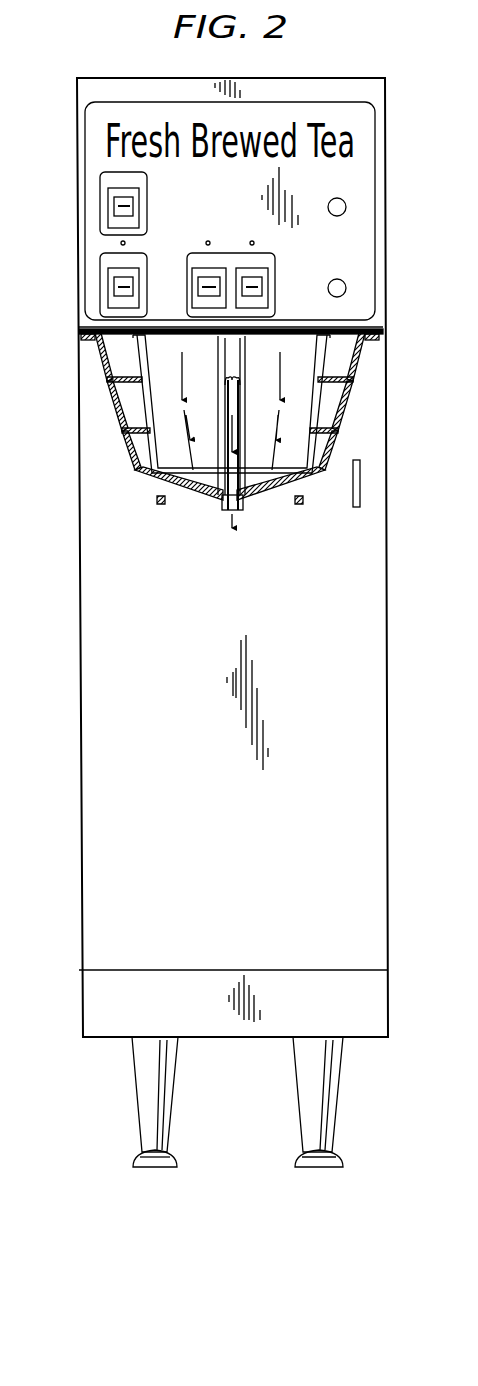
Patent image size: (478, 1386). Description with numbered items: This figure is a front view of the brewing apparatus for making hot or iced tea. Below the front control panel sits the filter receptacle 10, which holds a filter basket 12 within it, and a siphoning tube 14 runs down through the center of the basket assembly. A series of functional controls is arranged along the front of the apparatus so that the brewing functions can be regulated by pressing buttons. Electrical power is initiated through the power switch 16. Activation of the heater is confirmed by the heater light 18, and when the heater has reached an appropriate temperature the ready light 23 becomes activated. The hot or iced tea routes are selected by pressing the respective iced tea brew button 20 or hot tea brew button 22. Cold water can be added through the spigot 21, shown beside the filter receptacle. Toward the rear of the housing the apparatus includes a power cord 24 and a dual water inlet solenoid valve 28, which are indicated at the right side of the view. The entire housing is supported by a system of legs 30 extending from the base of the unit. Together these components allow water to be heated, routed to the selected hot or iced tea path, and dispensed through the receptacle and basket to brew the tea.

The filter receptacle 10 is at (352, 360).
The filter basket 12 is at (237, 432).
The siphoning tube 14 is at (340, 422).
The power switch 16 is at (128, 206).
The heater light 18 is at (346, 288).
The iced tea brew button 20 is at (128, 287).
The spigot 21 is at (360, 482).
The hot tea brew button 22 is at (204, 282).
The ready light 23 is at (346, 207).
The power cord 24 is at (469, 915).
The dual water inlet solenoid valve 28 is at (470, 808).
The legs 30 is at (338, 1093).